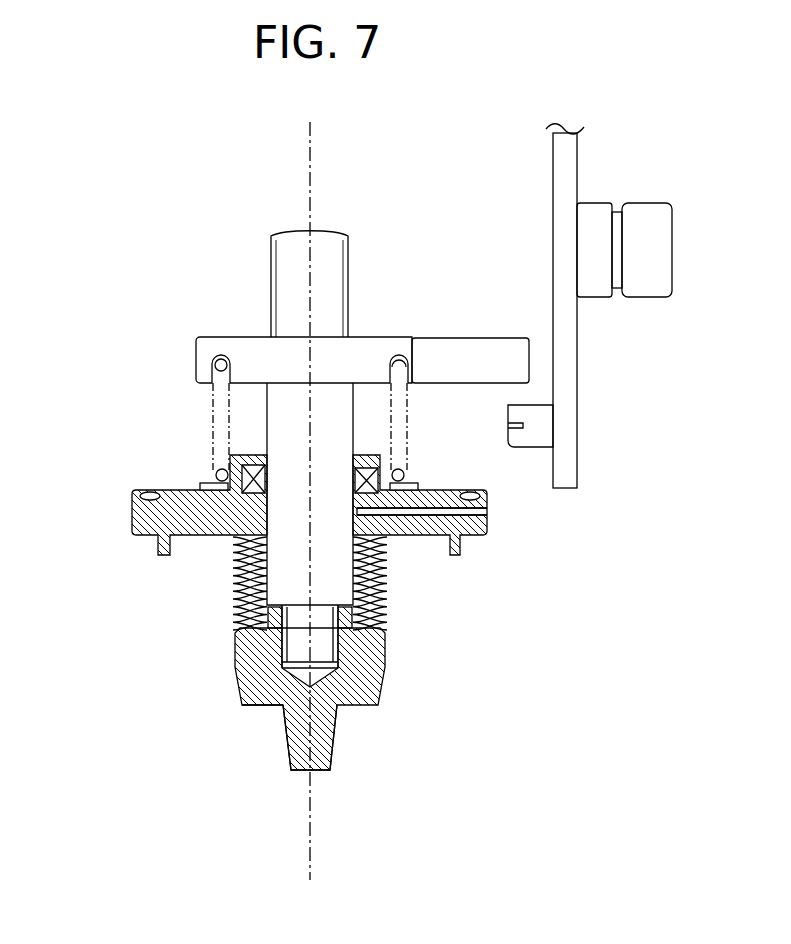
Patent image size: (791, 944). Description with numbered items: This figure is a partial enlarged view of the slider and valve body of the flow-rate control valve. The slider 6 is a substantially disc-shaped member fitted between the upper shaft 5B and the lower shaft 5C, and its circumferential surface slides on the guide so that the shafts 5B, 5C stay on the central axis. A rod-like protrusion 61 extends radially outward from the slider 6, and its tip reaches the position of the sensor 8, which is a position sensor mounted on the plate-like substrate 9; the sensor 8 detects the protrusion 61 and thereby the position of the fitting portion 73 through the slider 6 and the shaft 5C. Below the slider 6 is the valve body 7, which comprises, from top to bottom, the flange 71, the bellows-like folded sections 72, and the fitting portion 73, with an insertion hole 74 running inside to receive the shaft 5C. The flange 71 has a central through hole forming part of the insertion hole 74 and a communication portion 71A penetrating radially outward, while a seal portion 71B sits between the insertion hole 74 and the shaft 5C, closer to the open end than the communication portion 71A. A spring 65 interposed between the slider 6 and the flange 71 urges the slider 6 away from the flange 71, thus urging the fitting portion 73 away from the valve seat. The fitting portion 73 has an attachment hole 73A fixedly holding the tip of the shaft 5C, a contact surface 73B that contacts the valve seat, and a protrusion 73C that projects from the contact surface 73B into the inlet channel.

The shaft 5B is at (285, 261).
The shaft 5C is at (277, 408).
The slider 6 is at (183, 330).
The protrusion 61 is at (471, 345).
The spring 65 is at (220, 428).
The valve body 7 is at (98, 460).
The flange 71 is at (132, 517).
The communication portion 71A is at (483, 512).
The seal portion 71B is at (402, 468).
The folded section 72 is at (235, 603).
The fitting portion 73 is at (235, 668).
The attachment hole 73A is at (338, 668).
The contact surface 73B is at (265, 707).
The protrusion 73C is at (335, 747).
The insertion hole 74 is at (385, 595).
The sensor 8 is at (543, 423).
The substrate 9 is at (570, 169).